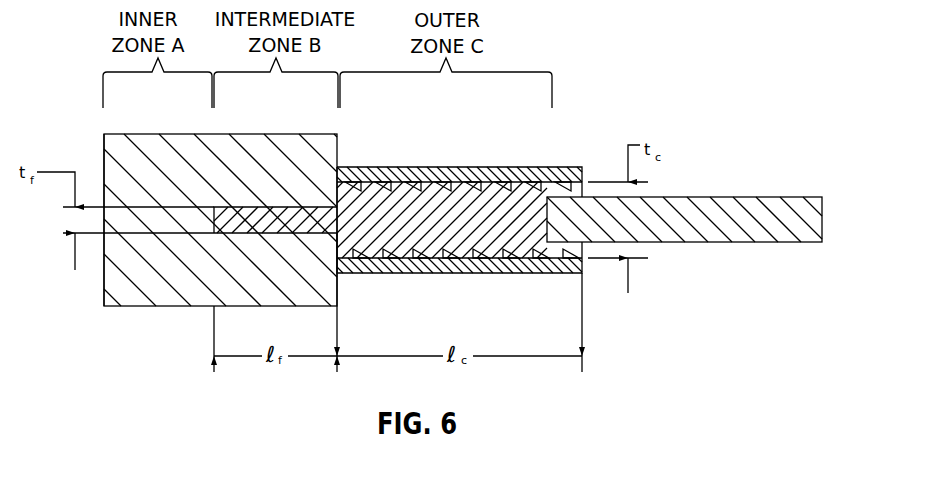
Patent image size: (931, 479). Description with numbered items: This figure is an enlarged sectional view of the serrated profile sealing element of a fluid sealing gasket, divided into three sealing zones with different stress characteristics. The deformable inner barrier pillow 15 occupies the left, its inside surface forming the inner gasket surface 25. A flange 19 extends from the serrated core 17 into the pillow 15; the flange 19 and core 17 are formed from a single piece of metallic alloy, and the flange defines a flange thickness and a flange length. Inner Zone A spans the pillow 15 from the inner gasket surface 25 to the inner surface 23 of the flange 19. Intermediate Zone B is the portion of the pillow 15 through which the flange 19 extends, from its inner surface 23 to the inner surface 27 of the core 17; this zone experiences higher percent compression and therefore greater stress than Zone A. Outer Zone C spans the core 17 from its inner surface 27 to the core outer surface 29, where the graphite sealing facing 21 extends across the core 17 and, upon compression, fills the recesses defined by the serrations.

The deformable inner barrier pillow 15 is at (133, 307).
The inner gasket surface 25 is at (104, 148).
The inner surface of the flange 23 is at (213, 233).
The flange 19 is at (247, 207).
The inner surface of the serrated profile core 27 is at (337, 245).
The graphite sealing facing 21 is at (527, 167).
The serrated core 17 is at (410, 193).
The core outer surface 29 is at (582, 274).